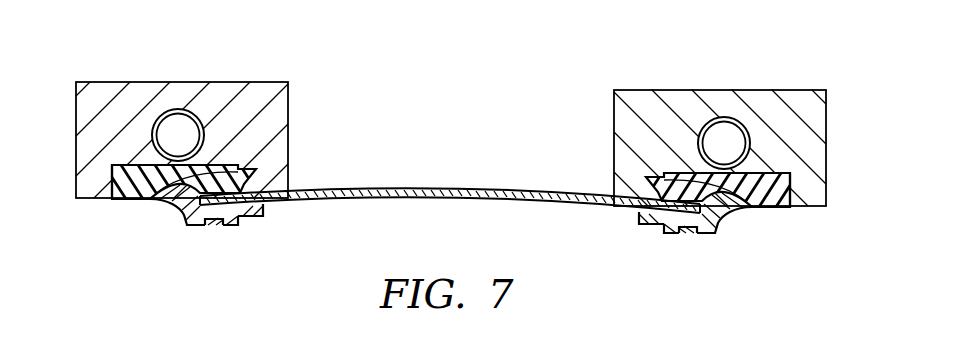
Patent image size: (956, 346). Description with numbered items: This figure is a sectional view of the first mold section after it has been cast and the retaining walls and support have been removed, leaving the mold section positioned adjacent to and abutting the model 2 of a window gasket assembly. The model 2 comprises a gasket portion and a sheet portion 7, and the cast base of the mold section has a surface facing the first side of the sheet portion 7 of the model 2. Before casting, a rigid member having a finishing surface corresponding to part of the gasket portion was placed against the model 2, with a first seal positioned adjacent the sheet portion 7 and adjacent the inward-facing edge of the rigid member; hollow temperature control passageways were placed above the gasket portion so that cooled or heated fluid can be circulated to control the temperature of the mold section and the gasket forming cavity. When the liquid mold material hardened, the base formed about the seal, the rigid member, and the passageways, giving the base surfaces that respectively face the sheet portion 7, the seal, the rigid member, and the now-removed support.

The model 2 is at (372, 176).
The sheet portion 7 is at (395, 200).